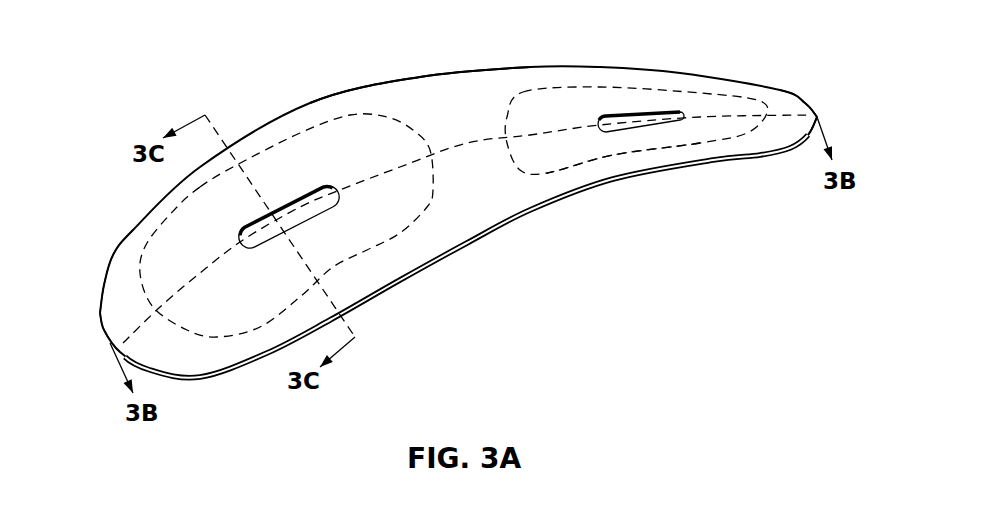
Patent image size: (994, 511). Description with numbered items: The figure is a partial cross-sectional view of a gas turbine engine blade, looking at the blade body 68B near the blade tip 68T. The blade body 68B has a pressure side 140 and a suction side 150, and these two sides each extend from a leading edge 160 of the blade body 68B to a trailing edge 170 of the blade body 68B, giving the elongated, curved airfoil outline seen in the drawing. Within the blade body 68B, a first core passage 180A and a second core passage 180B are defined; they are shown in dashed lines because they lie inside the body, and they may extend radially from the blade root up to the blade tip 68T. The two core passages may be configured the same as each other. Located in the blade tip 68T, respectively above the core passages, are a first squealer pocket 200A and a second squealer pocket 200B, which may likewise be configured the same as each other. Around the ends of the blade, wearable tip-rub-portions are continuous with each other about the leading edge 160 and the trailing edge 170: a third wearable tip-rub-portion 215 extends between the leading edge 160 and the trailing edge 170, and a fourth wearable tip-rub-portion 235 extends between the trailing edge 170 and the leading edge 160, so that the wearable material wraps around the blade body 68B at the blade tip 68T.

The blade tip 68T is at (807, 52).
The blade body 68B is at (613, 175).
The suction side 150 is at (417, 76).
The pressure side 140 is at (533, 212).
The leading edge 160 is at (110, 343).
The trailing edge 170 is at (790, 90).
The first core passage 180A is at (337, 133).
The second core passage 180B is at (670, 93).
The first squealer pocket 200A is at (185, 233).
The second squealer pocket 200B is at (635, 147).
The third wearable tip-rub-portion 215 is at (109, 270).
The fourth wearable tip-rub-portion 235 is at (817, 117).